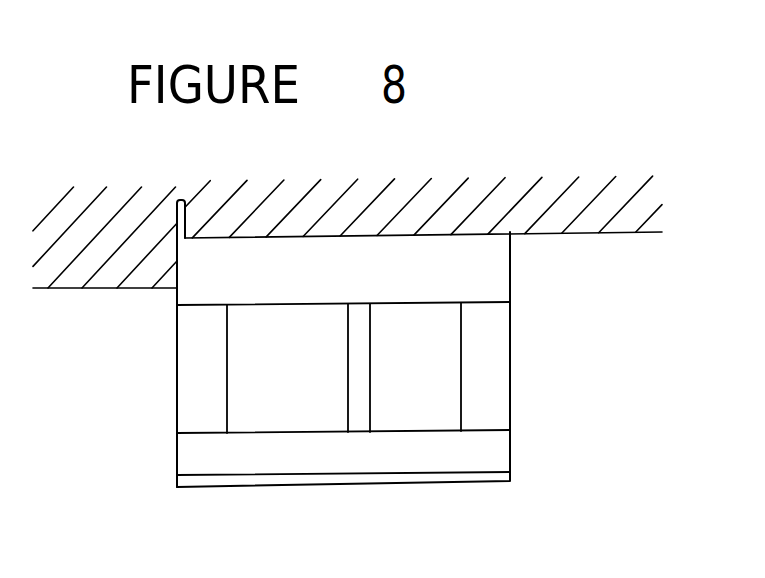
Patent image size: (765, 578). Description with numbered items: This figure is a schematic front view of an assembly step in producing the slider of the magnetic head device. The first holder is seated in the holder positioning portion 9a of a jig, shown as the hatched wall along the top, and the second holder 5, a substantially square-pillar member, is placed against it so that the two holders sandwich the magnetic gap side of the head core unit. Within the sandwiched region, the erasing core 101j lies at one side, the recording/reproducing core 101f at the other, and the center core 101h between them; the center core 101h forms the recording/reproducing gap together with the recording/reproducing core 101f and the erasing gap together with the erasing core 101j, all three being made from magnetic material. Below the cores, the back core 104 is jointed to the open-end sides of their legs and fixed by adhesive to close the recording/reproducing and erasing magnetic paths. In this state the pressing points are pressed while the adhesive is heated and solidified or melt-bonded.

The holder positioning portion 9a is at (292, 238).
The second holder 5 is at (473, 275).
The erasing core 101j is at (204, 388).
The center core 101h is at (364, 410).
The recording/reproducing core 101f is at (482, 370).
The back core 104 is at (495, 454).